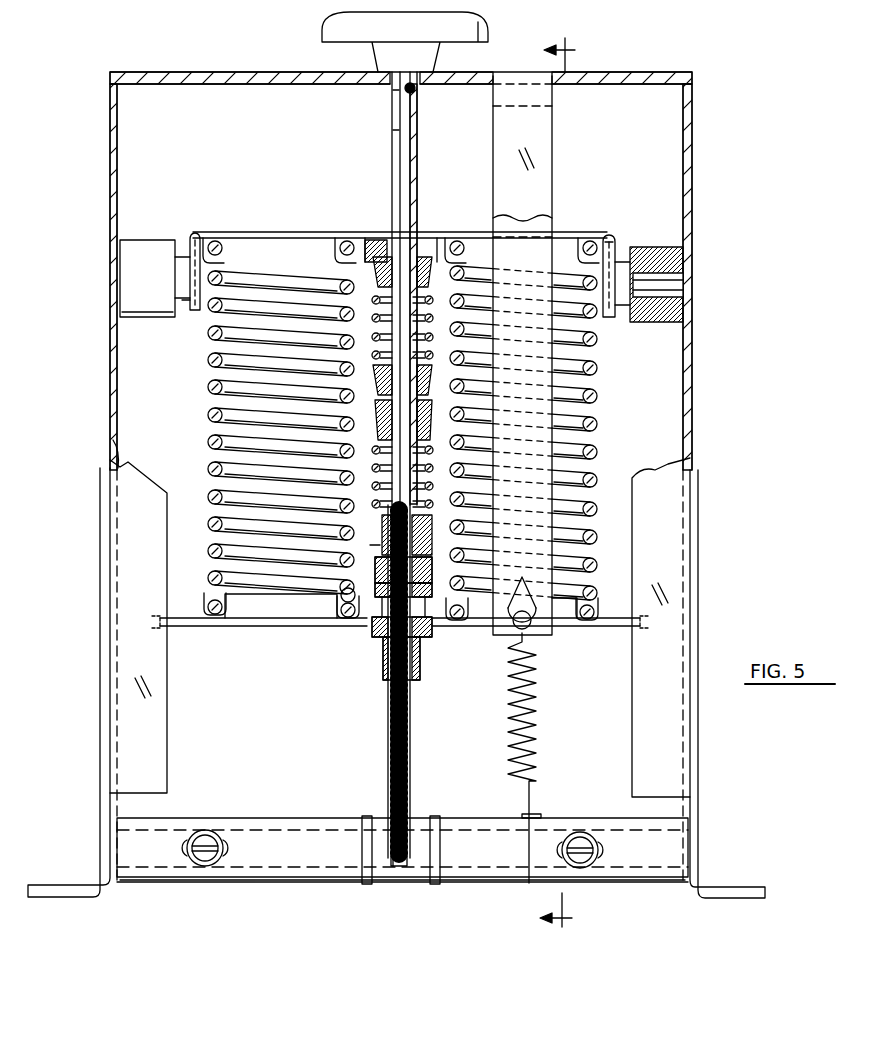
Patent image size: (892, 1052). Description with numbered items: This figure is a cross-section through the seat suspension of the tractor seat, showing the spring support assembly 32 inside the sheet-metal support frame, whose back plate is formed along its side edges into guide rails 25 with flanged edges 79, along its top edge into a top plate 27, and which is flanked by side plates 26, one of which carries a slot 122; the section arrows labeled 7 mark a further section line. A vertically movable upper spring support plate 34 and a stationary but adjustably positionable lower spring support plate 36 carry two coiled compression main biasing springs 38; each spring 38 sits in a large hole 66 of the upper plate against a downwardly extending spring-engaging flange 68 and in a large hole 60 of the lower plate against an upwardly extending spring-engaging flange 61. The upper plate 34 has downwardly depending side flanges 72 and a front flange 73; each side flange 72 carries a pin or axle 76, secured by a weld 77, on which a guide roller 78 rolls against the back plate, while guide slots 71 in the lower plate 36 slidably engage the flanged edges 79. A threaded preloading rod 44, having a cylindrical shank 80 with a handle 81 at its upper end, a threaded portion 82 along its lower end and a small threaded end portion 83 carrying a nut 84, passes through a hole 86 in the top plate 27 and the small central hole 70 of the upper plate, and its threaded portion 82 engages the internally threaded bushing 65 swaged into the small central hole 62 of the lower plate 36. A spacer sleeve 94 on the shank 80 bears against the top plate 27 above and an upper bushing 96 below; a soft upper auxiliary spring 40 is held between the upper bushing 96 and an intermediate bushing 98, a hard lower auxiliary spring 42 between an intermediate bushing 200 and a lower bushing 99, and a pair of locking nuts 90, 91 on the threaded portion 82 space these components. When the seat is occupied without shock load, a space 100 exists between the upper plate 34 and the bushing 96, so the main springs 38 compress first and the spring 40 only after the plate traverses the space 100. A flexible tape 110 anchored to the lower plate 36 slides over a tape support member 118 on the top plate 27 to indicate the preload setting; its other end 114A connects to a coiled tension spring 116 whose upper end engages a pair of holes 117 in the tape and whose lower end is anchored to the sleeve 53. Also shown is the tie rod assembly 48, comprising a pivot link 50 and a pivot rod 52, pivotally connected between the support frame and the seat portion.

The section line 7- 7 is at (546, 485).
The guide rails 25 is at (133, 467).
The side plates 26 is at (100, 676).
The top plate 27 is at (662, 73).
The spring support assembly 32 is at (605, 228).
The upper spring support plate 34 is at (196, 233).
The lower spring support plate 36 is at (232, 626).
The main biasing springs 38 is at (208, 384).
The upper auxiliary spring 40 is at (375, 345).
The lower auxiliary spring 42 is at (430, 515).
The preloading rod 44 is at (392, 130).
The tie rod assembly 48 is at (581, 832).
The pivot link 50 is at (362, 818).
The pivot rod 52 is at (645, 880).
The sleeve 53 is at (500, 885).
The large holes 60 is at (245, 620).
The spring-engaging flange 61 is at (208, 600).
The small central hole 62 is at (420, 625).
The rod-receiving bushing 65 is at (383, 660).
The large holes 66 is at (340, 248).
The spring-engaging flange 68 is at (232, 240).
The small central hole 70 is at (428, 235).
The guide slots 71 is at (165, 626).
The side flanges 72 is at (180, 310).
The front flange 73 is at (198, 315).
The pin or axle 76 is at (683, 286).
The weld 77 is at (615, 242).
The guide roller 78 is at (140, 240).
The flanged edges 79 is at (167, 505).
The cylindrical shank 80 is at (392, 104).
The handle 81 is at (330, 30).
The threaded portion 82 is at (412, 752).
The threaded end portion 83 is at (405, 866).
The nut 84 is at (392, 866).
The hole 86 is at (416, 90).
The nut 90 is at (432, 594).
The nut 91 is at (432, 562).
The spacer sleeve 94 is at (418, 142).
The upper bushing 96 is at (372, 238).
The intermediate bushing 98 is at (435, 395).
The lower bushing 99 is at (378, 545).
The space 100 is at (438, 248).
The flexible tape 110 is at (540, 158).
The other end 114A is at (540, 640).
The tension spring 116 is at (537, 708).
The holes 117 is at (521, 581).
The tape support member 118 is at (553, 98).
The slot 122 is at (625, 272).
The intermediate bushing 200 is at (433, 420).